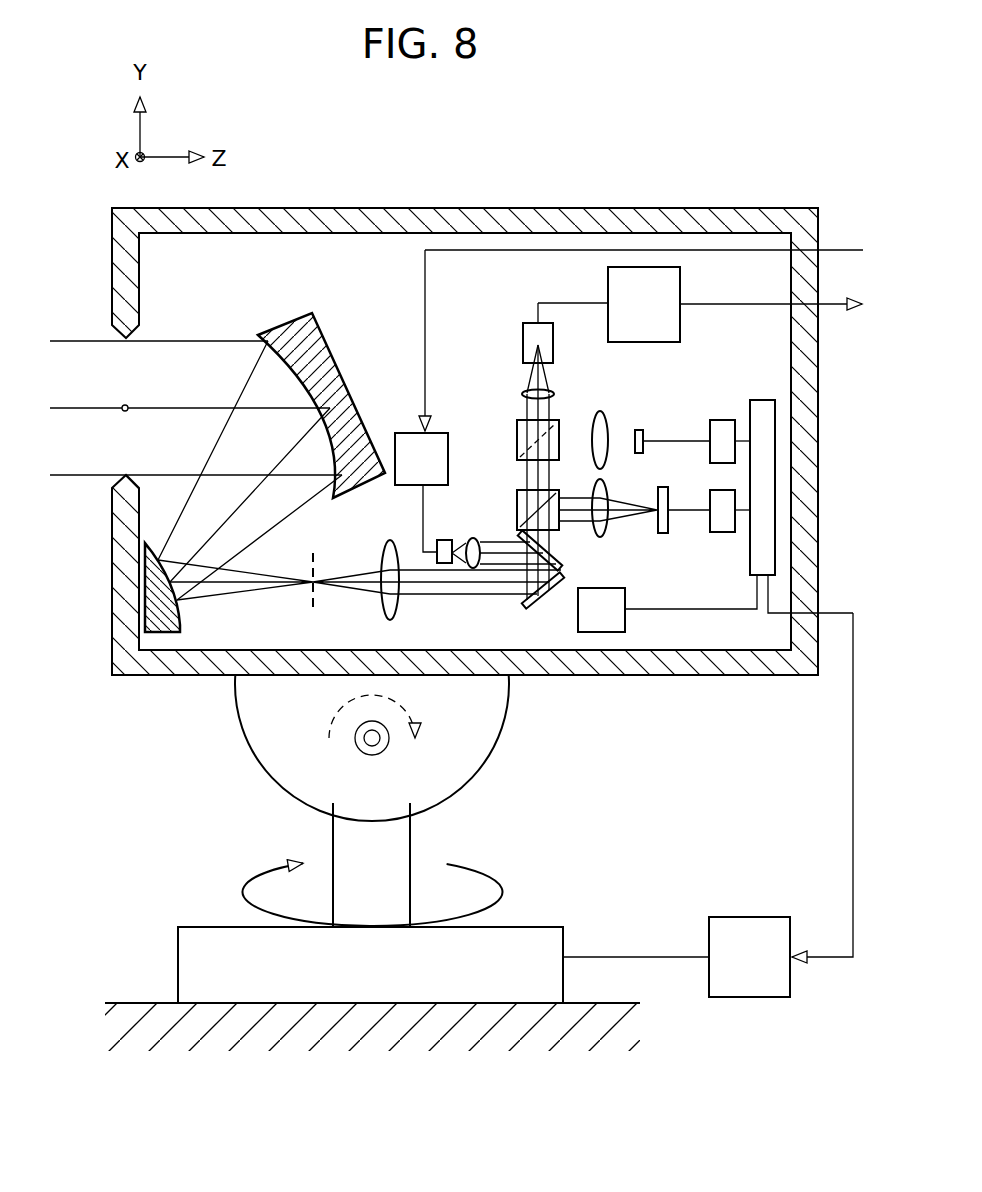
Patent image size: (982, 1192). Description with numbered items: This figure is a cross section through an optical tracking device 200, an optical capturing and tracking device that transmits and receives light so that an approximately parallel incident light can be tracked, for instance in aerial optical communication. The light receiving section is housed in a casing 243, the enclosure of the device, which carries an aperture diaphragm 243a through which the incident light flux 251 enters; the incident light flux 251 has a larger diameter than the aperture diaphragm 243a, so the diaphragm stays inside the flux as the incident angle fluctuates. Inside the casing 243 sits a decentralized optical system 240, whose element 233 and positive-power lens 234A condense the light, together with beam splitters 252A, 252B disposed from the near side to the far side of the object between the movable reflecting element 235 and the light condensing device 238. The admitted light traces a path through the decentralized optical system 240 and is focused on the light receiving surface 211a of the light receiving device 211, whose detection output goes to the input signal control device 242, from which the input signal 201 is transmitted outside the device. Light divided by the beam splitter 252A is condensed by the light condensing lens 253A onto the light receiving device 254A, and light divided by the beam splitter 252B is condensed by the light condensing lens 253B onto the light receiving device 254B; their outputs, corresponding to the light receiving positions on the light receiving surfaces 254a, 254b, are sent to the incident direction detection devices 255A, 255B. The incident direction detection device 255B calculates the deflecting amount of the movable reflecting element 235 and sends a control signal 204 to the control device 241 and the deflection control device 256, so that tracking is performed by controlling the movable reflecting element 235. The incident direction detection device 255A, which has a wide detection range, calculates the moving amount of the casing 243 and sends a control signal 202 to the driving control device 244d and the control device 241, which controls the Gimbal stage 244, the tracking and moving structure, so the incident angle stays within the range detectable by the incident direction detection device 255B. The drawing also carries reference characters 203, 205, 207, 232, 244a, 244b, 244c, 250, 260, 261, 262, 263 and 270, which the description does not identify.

The optical tracking device 200 is at (511, 145).
The input signal 201 is at (838, 306).
The control signal 202 is at (853, 770).
The input signal line 203 is at (838, 250).
The control signal 204 is at (707, 613).
The slit 205 is at (316, 592).
The measurement light path 207 is at (512, 602).
The light receiving device 211 is at (524, 335).
The light receiving surface 211a is at (535, 345).
The concave mirror 232 is at (306, 321).
The decentralized optical system element 233 is at (140, 634).
The lens 234A is at (382, 562).
The movable reflecting element 235 is at (541, 604).
The light condensing device 238 is at (522, 393).
The decentralized optical system 240 is at (215, 617).
The control device 241 is at (762, 400).
The input signal control device 242 is at (608, 288).
The casing 243 is at (578, 208).
The aperture diaphragm 243a is at (125, 378).
The Gimbal stage 244 is at (597, 680).
The rotating disk 244a is at (243, 730).
The rotation shaft 244b is at (333, 820).
The base 244c is at (178, 945).
The driving control device 244d is at (733, 917).
The optical axis 250 is at (65, 410).
The incident light flux 251 is at (70, 512).
The beam splitter 252A is at (517, 495).
The beam splitter 252B is at (517, 428).
The light condensing lens 253A is at (603, 482).
The light condensing lens 253B is at (600, 410).
The light receiving device 254A is at (668, 525).
The light receiving surface 254a is at (657, 535).
The light receiving device 254B is at (645, 436).
The light receiving surface 254b is at (640, 430).
The incident direction detection device 255A is at (728, 535).
The incident direction detection device 255B is at (724, 420).
The deflection control device 256 is at (625, 628).
The reflecting mirror 260 is at (562, 562).
The laser light source 261 is at (444, 540).
The lens 262 is at (420, 548).
The laser drive unit 263 is at (412, 433).
The laser beam 270 is at (497, 530).